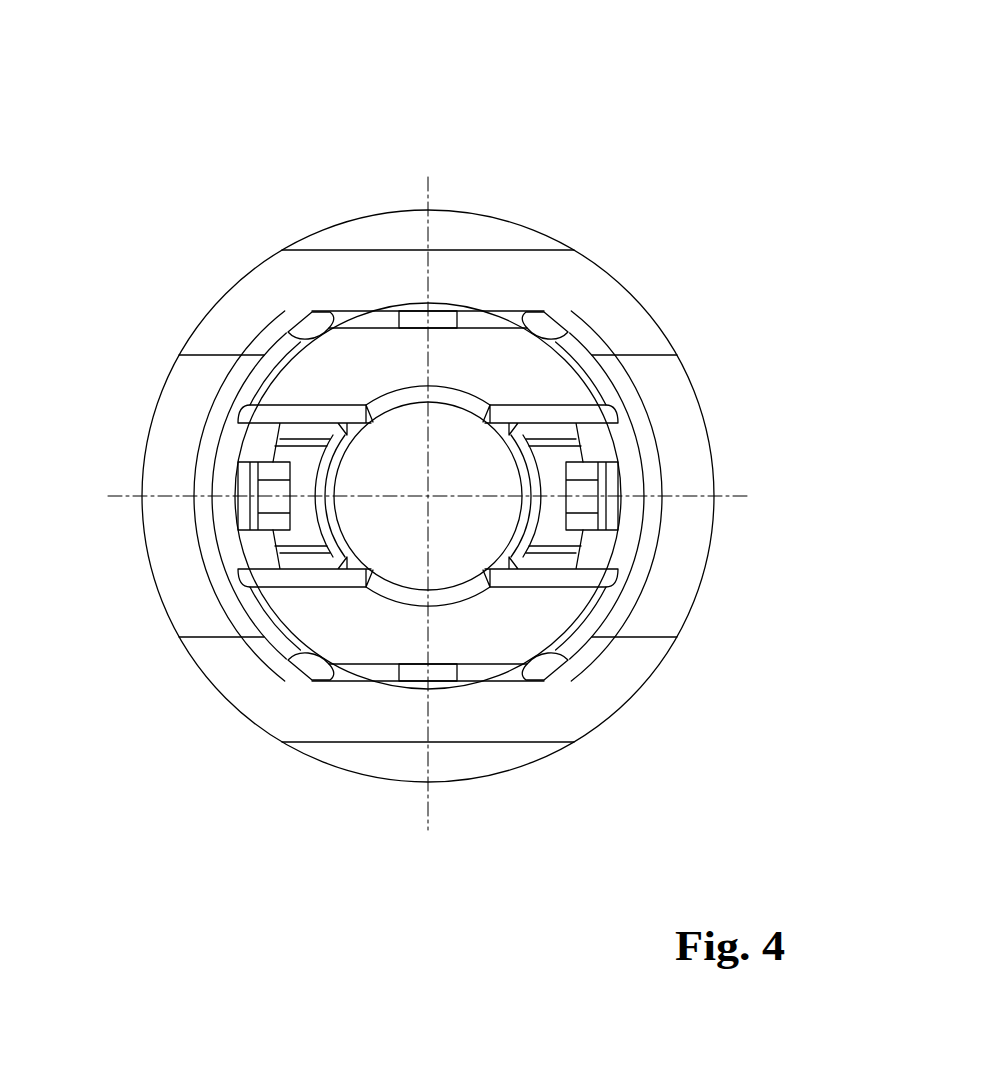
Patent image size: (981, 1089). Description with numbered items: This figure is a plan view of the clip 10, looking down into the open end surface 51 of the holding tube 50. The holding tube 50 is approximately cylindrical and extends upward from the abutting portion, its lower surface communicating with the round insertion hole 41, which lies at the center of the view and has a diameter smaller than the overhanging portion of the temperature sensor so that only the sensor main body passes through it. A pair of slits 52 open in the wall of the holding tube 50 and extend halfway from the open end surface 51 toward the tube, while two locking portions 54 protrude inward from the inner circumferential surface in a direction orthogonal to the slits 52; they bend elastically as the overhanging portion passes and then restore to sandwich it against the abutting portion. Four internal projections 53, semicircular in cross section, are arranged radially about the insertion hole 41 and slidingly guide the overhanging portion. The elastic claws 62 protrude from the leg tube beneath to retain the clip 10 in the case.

The assembly 10 is at (213, 93).
The insertion hole 41 is at (408, 560).
The holding tube 50 is at (375, 262).
The open end surface 51 is at (450, 496).
The slits 52 is at (185, 395).
The internal projections 53 is at (305, 335).
The locking portions 54 is at (440, 318).
The elastic claws 62 is at (245, 508).